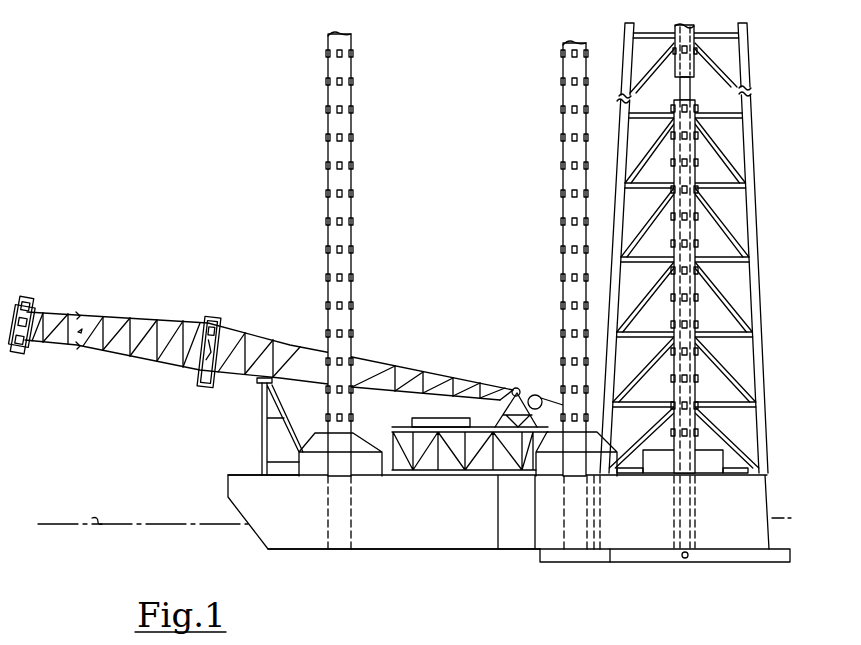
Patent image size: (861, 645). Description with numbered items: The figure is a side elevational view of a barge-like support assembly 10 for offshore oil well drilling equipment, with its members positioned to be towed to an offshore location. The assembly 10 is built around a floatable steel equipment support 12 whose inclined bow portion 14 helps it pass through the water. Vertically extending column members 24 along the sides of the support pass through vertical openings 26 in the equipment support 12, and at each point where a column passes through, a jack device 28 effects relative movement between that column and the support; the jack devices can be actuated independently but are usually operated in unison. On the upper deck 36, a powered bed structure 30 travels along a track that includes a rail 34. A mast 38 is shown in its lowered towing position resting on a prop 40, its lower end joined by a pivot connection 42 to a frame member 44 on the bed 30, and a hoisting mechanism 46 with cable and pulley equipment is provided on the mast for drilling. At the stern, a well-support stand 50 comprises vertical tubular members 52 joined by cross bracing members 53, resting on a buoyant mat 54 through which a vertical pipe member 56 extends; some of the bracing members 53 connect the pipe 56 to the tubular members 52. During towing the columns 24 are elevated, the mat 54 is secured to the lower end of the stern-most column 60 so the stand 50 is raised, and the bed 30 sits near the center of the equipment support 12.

The support assembly 10 is at (448, 272).
The equipment support 12 is at (229, 480).
The inclined bow portion 14 is at (252, 537).
The column members 24 is at (352, 198).
The vertical openings 26 is at (328, 493).
The jack devices 28 is at (358, 431).
The bed structure 30 is at (394, 425).
The rail 34 is at (635, 468).
The upper deck 36 is at (252, 474).
The mast 38 is at (173, 321).
The prop 40 is at (262, 406).
The pivot connection 42 is at (518, 389).
The frame member 44 is at (502, 413).
The hoisting mechanism 46 is at (548, 394).
The well-support stand 50 is at (761, 161).
The tubular members 52 is at (626, 210).
The cross bracing members 53 is at (651, 267).
The mat 54 is at (770, 562).
The pipe member 56 is at (690, 86).
The stern-most column 60 is at (695, 307).